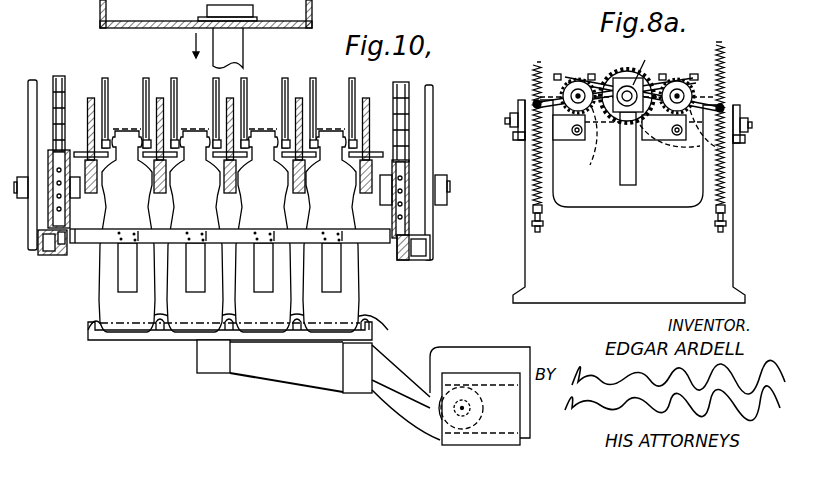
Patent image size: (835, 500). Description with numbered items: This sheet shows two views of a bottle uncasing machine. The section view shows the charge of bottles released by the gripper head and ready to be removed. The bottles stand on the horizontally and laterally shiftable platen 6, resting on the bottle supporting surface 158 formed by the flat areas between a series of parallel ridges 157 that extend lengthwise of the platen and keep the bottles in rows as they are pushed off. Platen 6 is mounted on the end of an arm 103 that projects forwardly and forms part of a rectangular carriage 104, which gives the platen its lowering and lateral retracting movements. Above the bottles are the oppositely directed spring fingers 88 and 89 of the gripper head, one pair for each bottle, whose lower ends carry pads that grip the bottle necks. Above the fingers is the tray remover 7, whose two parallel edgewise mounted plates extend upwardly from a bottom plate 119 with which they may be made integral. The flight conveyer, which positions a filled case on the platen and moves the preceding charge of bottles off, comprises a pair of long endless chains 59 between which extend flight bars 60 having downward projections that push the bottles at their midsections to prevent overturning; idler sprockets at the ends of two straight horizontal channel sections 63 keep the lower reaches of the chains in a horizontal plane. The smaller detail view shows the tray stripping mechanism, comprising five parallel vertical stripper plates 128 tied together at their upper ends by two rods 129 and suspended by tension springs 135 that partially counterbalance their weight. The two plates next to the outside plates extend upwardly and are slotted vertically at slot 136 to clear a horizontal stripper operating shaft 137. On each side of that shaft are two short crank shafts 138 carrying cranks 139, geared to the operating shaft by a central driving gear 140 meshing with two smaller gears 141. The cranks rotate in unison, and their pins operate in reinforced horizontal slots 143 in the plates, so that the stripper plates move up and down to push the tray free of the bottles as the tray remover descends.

In FIG. 10, the tray remover 7 is at (146, 31).
In FIG. 10, the bottom plate 119 is at (272, 30).
In FIG. 10, the endless chains 59 is at (57, 78).
In FIG. 10, the spring fingers 88 is at (108, 76).
In FIG. 10, the spring fingers 89 is at (360, 81).
In FIG. 10, the flight bars 60 is at (262, 263).
In FIG. 10, the channel sections 63 is at (50, 255).
In FIG. 10, the ridges 157 is at (93, 327).
In FIG. 10, the bottle supporting surface 158 is at (204, 329).
In FIG. 10, the platen 6 is at (180, 340).
In FIG. 10, the arm 103 is at (306, 372).
In FIG. 10, the carriage 104 is at (516, 345).
In FIG. 8A, the stripper plates 128 is at (560, 180).
In FIG. 8A, the tie rods 129 is at (537, 103).
In FIG. 8A, the tension springs 135 is at (535, 68).
In FIG. 8A, the vertical slot 136 is at (637, 168).
In FIG. 8A, the stripper operating shaft 137 is at (653, 61).
In FIG. 8A, the crank shafts 138 is at (578, 80).
In FIG. 8A, the cranks 139 is at (755, 128).
In FIG. 8A, the central driving gear 140 is at (627, 82).
In FIG. 8A, the smaller gears 141 is at (547, 95).
In FIG. 8A, the horizontal slots 143 is at (540, 140).